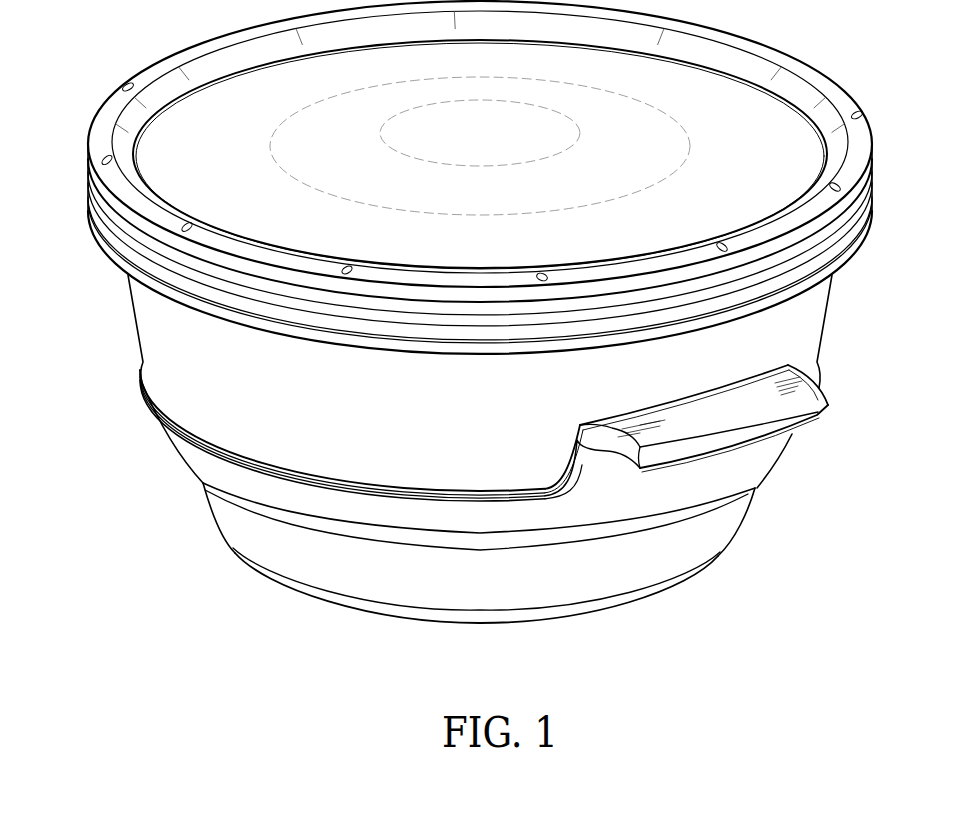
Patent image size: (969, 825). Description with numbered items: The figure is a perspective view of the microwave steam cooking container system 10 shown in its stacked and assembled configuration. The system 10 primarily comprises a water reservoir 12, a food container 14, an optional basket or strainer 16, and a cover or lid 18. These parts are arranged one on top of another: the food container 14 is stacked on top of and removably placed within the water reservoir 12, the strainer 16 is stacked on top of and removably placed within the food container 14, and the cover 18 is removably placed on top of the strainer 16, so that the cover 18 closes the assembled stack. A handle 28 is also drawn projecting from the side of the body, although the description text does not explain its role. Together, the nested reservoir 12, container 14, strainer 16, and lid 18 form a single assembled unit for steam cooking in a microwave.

The microwave steam cooking container system 10 is at (463, 312).
The water reservoir 12 is at (756, 517).
The food container 14 is at (147, 326).
The basket or strainer 16 is at (127, 246).
The cover or lid 18 is at (104, 97).
The handle 28 is at (760, 402).